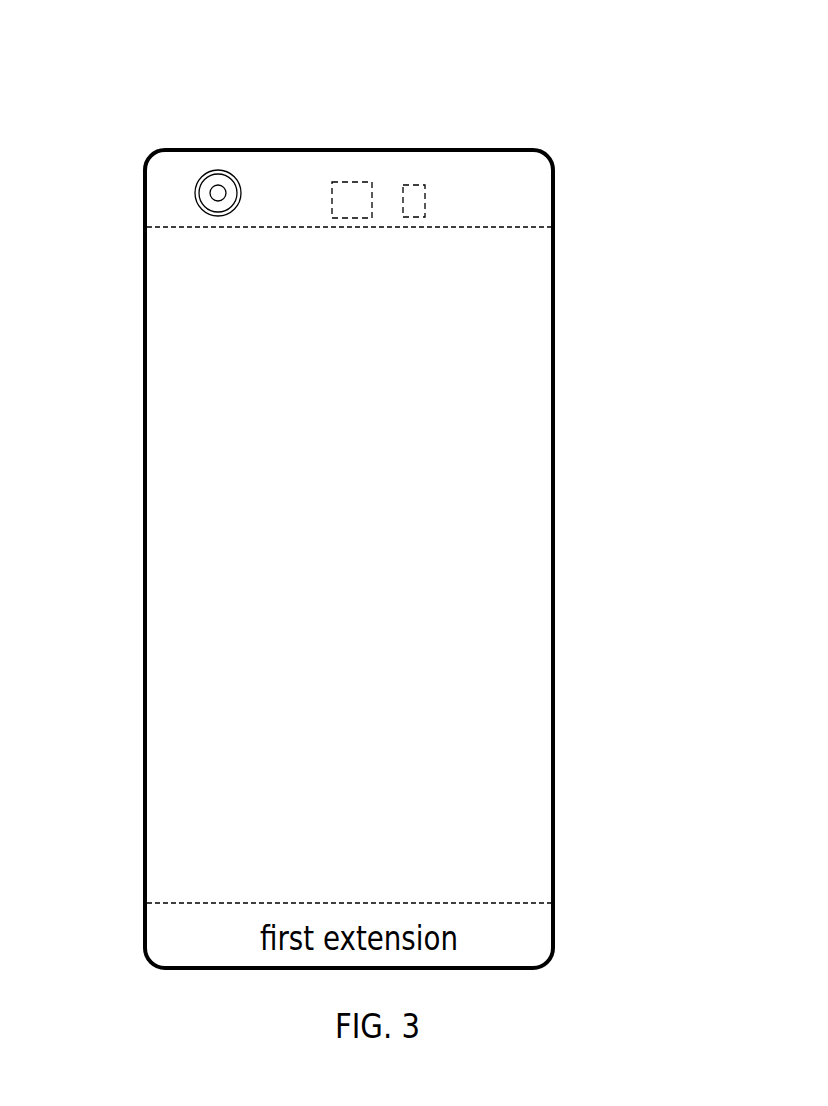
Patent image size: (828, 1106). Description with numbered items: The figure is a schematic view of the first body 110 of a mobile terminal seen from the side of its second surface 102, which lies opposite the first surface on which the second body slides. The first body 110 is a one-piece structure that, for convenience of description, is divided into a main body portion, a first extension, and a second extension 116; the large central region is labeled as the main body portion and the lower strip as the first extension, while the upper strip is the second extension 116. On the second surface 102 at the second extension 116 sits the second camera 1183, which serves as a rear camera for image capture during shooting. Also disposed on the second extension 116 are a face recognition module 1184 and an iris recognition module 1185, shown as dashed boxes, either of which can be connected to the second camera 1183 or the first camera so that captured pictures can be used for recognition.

The first body 110 is at (392, 25).
The second extension 116 is at (533, 185).
The second surface 102 is at (512, 516).
The second camera 1183 is at (205, 200).
The face recognition module 1184 is at (345, 203).
The iris recognition module 1185 is at (410, 203).